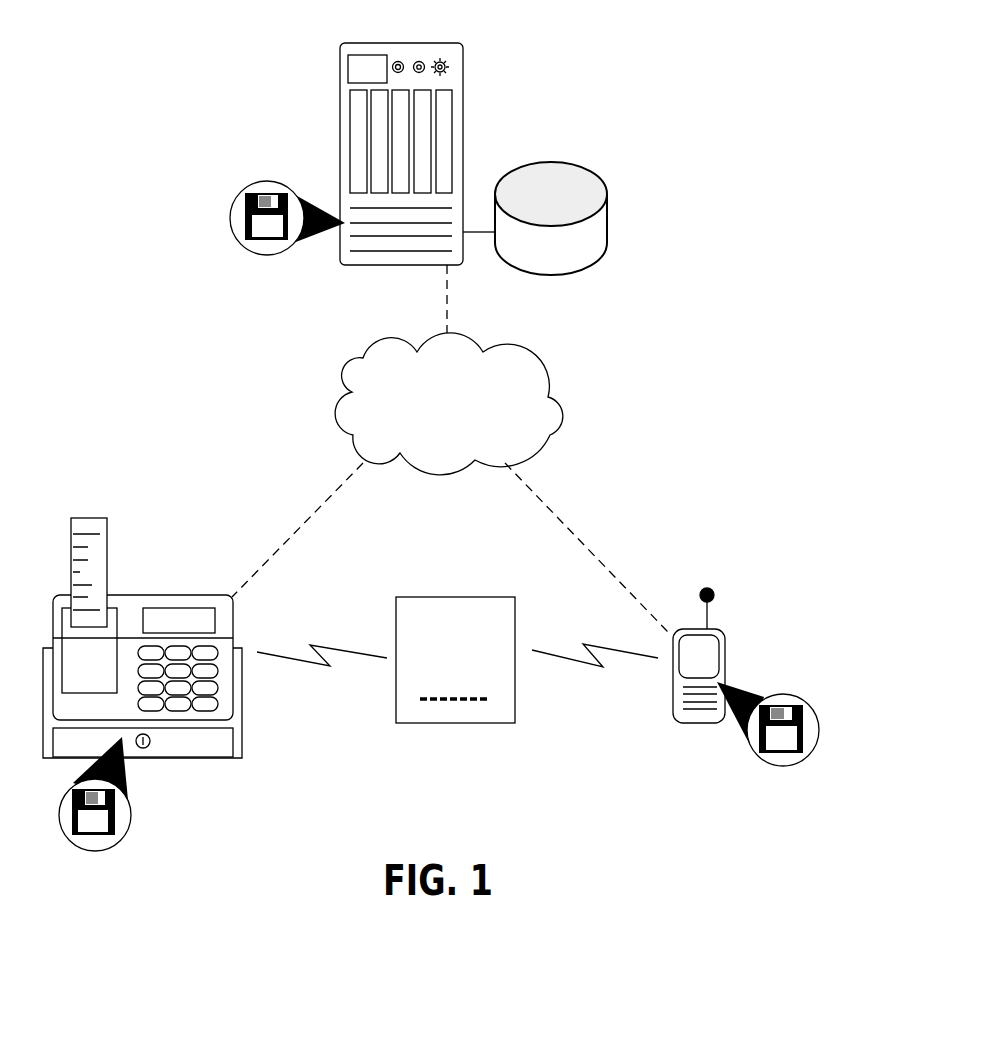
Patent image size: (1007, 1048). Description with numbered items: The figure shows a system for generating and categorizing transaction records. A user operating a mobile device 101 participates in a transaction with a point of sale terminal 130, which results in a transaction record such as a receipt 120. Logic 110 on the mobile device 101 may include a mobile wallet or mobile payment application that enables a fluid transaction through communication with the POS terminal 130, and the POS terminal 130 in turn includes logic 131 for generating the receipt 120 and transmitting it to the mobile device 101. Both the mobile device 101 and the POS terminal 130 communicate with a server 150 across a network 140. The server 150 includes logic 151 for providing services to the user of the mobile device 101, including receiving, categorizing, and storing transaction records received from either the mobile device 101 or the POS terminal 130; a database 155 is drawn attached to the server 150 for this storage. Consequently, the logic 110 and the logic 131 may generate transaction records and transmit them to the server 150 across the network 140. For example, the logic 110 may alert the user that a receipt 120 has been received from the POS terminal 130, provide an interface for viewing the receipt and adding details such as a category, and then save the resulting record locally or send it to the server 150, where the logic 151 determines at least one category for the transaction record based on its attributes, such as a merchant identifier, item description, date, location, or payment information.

The server 150 is at (463, 47).
The logic 151 is at (253, 193).
The database 155 is at (588, 172).
The network 140 is at (333, 402).
The point of sale terminal 130 is at (208, 757).
The logic 131 is at (115, 827).
The receipt 120 is at (480, 723).
The mobile device 101 is at (727, 643).
The logic 110 is at (762, 753).